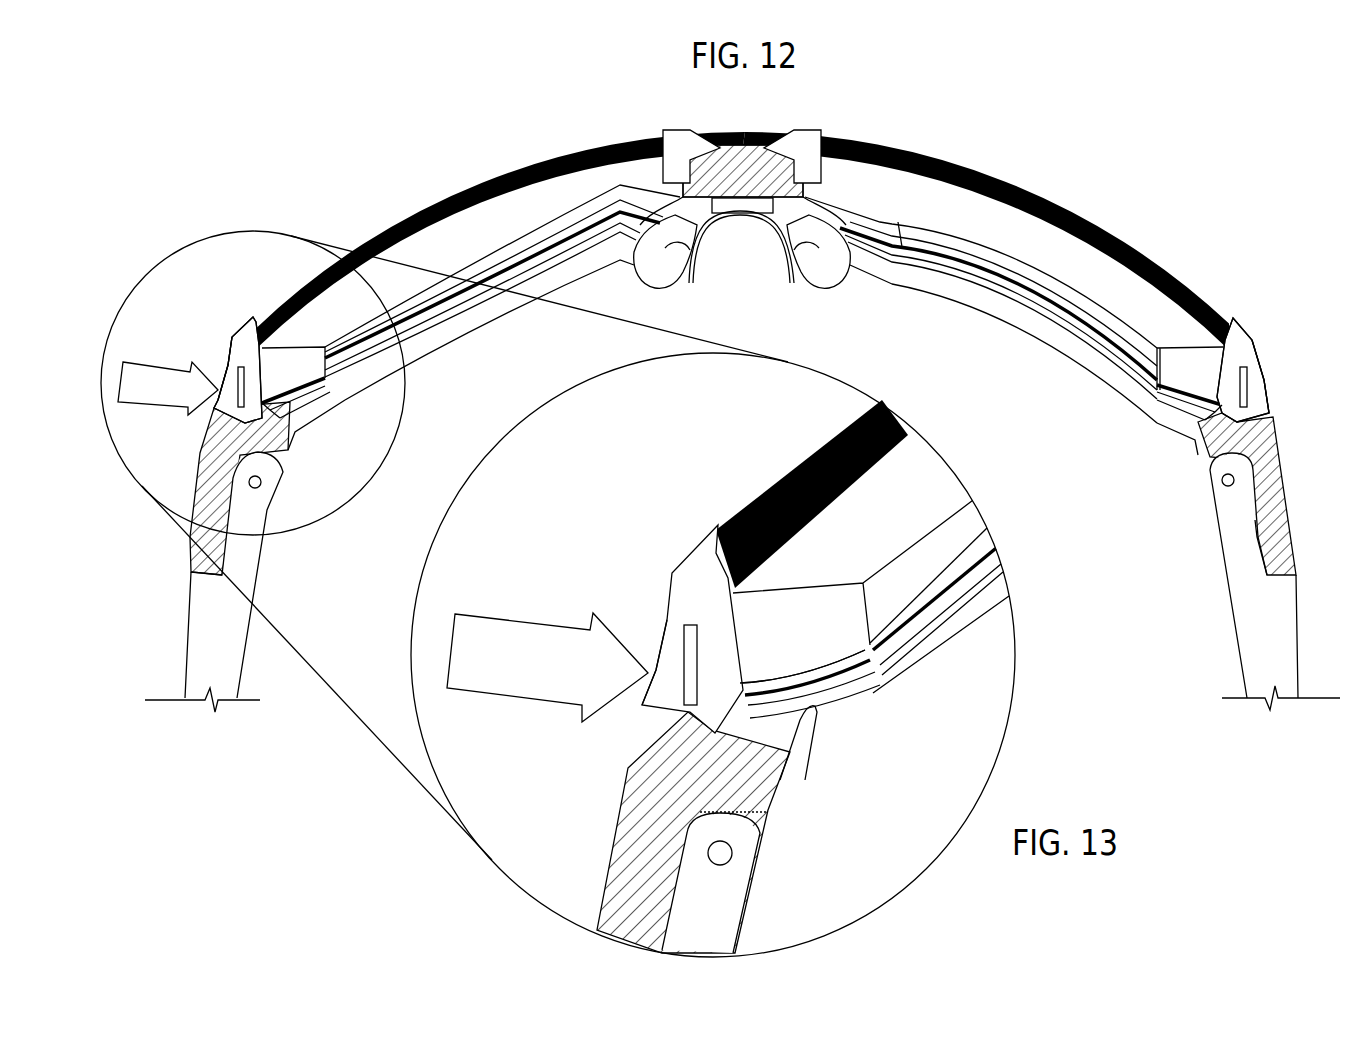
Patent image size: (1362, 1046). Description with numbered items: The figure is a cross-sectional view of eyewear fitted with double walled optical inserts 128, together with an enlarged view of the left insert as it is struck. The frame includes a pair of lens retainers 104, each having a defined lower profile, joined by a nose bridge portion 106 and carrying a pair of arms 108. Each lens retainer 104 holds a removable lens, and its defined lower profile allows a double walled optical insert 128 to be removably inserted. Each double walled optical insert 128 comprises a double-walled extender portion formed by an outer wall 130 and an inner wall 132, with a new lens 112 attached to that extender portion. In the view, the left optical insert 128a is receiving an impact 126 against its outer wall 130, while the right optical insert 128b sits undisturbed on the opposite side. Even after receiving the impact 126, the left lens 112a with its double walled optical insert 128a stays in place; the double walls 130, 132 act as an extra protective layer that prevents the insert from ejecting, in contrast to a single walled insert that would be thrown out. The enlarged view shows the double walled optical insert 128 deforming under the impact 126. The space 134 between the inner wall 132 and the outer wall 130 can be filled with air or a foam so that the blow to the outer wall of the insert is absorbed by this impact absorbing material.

In FIG. 12, the lens retainer 104 is at (503, 306).
In FIG. 12, the nose bridge portion 106 is at (745, 165).
In FIG. 12, the arm 108 is at (237, 661).
In FIG. 12, the new lens 112 is at (1076, 210).
In FIG. 12, the left lens 112a is at (463, 186).
In FIG. 13, the left lens 112a is at (776, 486).
In FIG. 12, the impact 126 is at (168, 388).
In FIG. 13, the impact 126 is at (547, 667).
In FIG. 12, the double walled optical insert 128 is at (228, 312).
In FIG. 12, the left optical insert 128a is at (322, 152).
In FIG. 13, the left optical insert 128a is at (659, 522).
In FIG. 12, the right optical insert 128b is at (1161, 155).
In FIG. 12, the outer wall 130 is at (230, 380).
In FIG. 13, the outer wall 130 is at (675, 661).
In FIG. 12, the inner wall 132 is at (255, 398).
In FIG. 13, the inner wall 132 is at (720, 690).
In FIG. 12, the space 134 is at (242, 411).
In FIG. 13, the space 134 is at (672, 700).